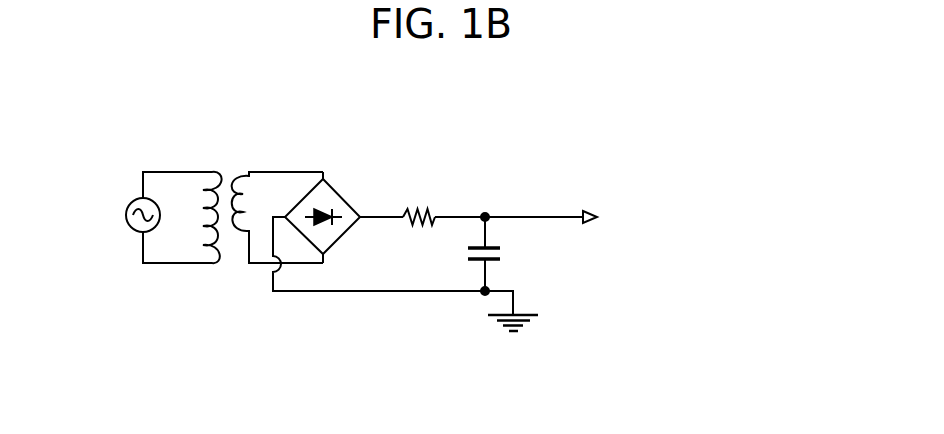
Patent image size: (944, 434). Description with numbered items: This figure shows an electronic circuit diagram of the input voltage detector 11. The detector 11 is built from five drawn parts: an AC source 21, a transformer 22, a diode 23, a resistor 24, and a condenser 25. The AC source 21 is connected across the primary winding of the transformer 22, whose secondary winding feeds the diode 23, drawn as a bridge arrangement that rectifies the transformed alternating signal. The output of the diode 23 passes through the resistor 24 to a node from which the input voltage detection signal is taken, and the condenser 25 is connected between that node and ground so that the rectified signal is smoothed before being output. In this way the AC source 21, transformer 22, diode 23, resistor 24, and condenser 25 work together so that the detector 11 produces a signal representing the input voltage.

The input voltage detector 11 is at (491, 150).
The AC source 21 is at (131, 203).
The transformer 22 is at (212, 265).
The diode 23 is at (340, 197).
The resistor 24 is at (426, 210).
The condenser 25 is at (512, 256).